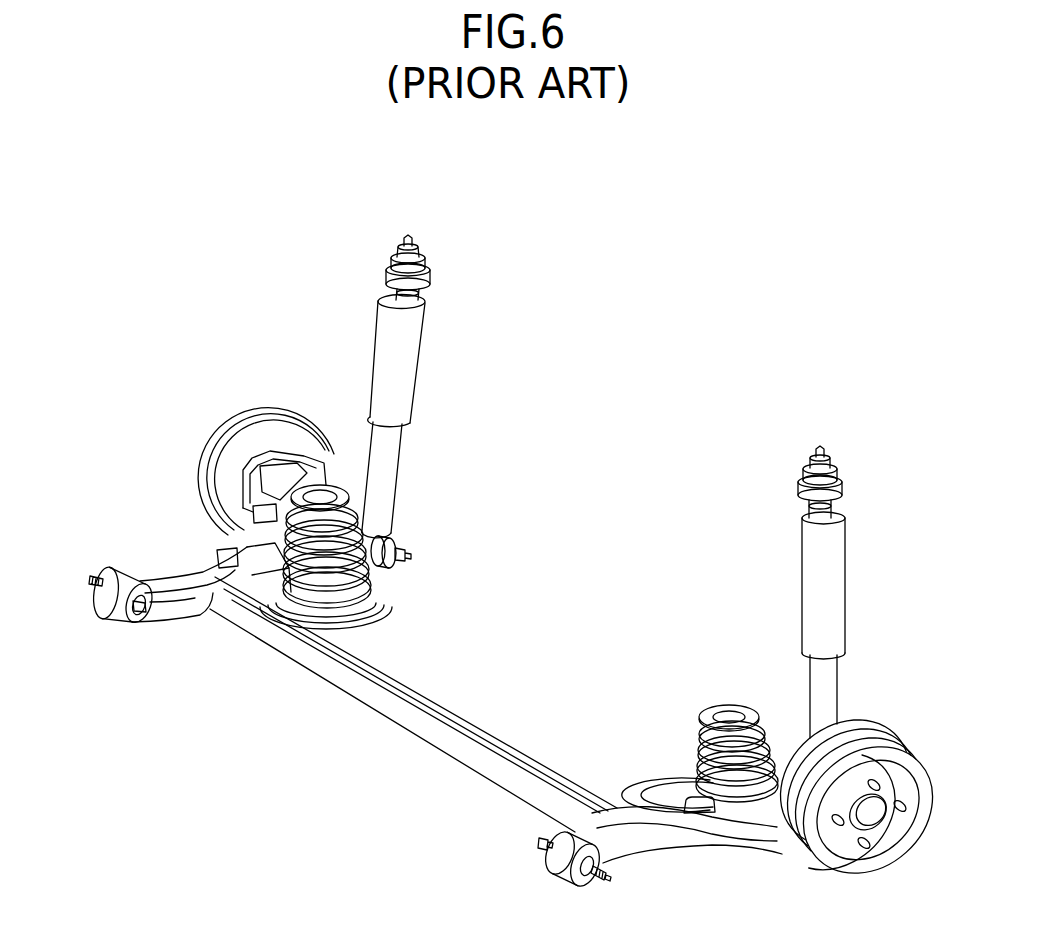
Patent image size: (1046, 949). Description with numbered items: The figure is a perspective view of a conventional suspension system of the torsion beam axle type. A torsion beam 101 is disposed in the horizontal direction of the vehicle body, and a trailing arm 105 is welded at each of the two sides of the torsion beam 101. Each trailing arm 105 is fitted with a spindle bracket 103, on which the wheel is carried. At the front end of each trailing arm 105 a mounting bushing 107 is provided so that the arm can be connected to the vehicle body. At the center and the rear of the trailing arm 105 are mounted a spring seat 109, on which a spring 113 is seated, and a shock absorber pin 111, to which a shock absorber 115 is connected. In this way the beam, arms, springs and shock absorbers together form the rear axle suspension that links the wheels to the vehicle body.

The torsion beam 101 is at (398, 716).
The spindle bracket 103 is at (248, 470).
The trailing arm 105 is at (183, 606).
The mounting bushing 107 is at (109, 566).
The spring seat 109 is at (392, 588).
The shock absorber pin 111 is at (402, 558).
The spring 113 is at (362, 506).
The shock absorber 115 is at (412, 358).